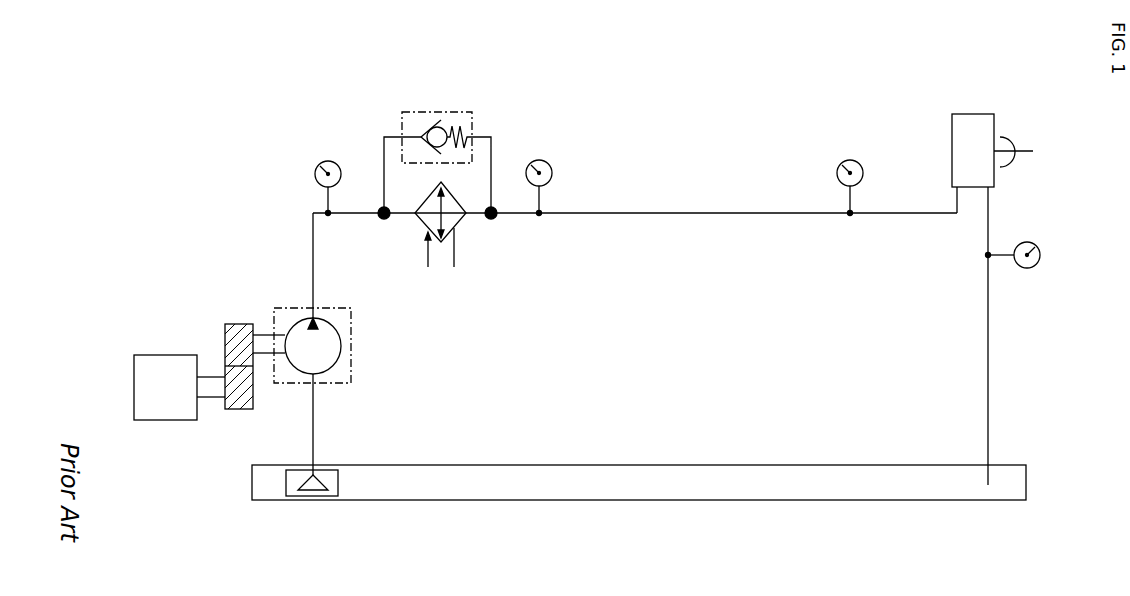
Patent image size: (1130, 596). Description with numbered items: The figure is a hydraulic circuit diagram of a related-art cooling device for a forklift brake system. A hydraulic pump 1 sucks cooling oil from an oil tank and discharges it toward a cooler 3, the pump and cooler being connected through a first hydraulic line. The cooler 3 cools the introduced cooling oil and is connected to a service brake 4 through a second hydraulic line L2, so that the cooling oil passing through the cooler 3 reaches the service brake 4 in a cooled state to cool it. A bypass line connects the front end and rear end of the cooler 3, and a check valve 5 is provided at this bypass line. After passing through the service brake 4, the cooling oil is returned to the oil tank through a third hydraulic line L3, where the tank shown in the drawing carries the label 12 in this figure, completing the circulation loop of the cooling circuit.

The hydraulic pump 1 is at (341, 343).
The cooler 3 is at (460, 222).
The check valve 5 is at (440, 125).
The service brake 4 is at (970, 114).
The second hydraulic line L2 is at (617, 213).
The third hydraulic line L3 is at (988, 350).
The tank 12 is at (623, 465).